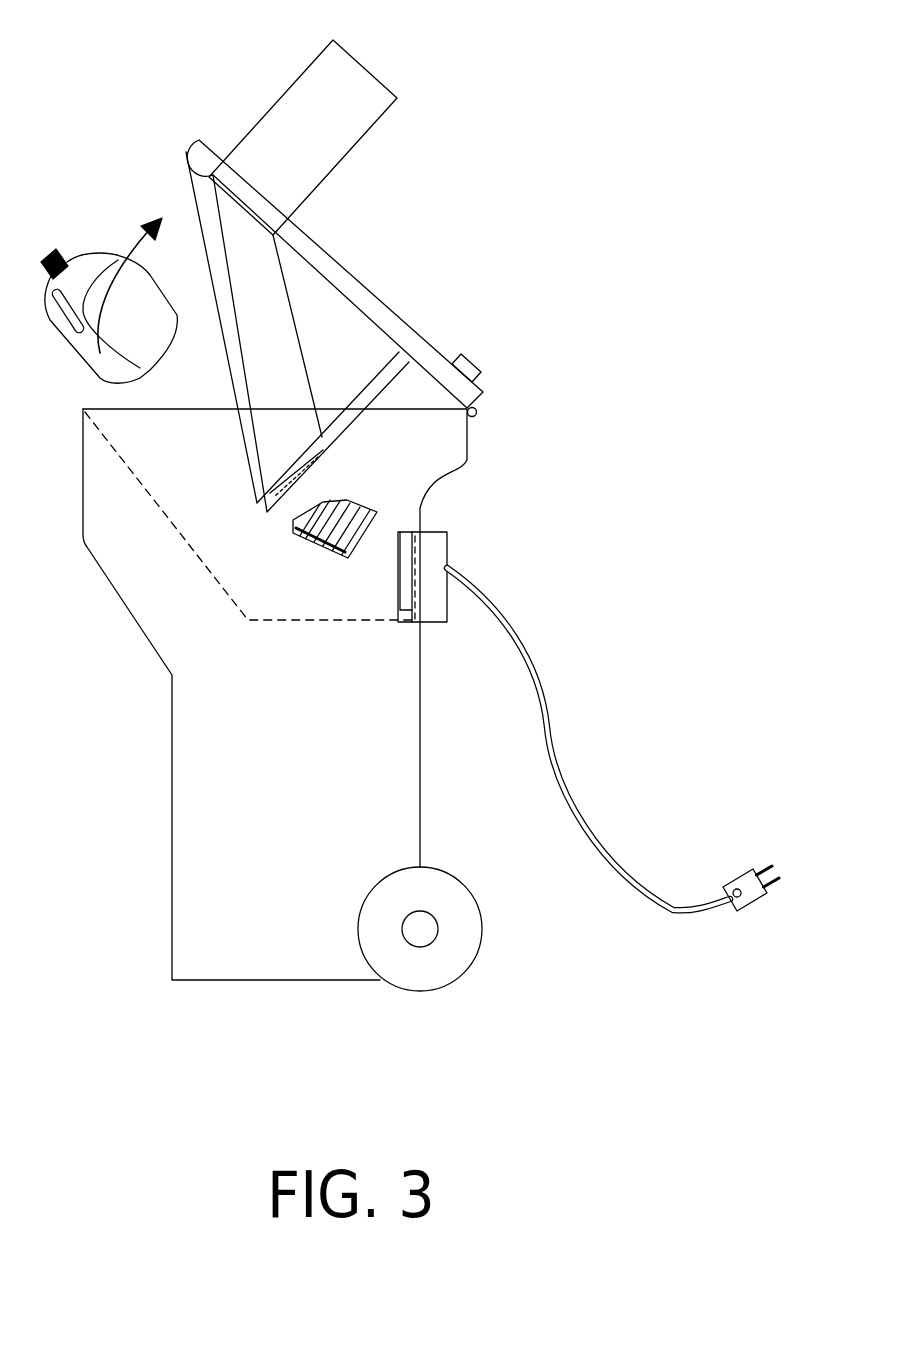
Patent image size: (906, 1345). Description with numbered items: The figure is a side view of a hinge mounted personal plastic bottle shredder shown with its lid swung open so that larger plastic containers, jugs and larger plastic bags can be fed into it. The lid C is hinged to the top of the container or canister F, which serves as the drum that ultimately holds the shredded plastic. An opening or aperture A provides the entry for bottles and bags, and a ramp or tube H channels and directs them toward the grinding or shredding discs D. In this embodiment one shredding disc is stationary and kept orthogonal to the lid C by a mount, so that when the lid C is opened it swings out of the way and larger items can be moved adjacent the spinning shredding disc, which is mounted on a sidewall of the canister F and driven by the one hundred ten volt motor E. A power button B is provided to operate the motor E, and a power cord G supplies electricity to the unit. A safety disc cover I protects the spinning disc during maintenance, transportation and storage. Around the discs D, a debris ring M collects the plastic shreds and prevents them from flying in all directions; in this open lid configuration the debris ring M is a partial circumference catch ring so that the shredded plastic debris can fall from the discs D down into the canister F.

The opening or aperture A is at (370, 71).
The power button B is at (472, 363).
The lid C is at (414, 328).
The grinding or shredding discs D is at (313, 465).
The 110 volt motor E is at (433, 565).
The container or canister F is at (215, 790).
The power cord G is at (578, 812).
The ramp or tube H is at (270, 320).
The safety disc cover I is at (418, 623).
The debris ring M is at (398, 589).